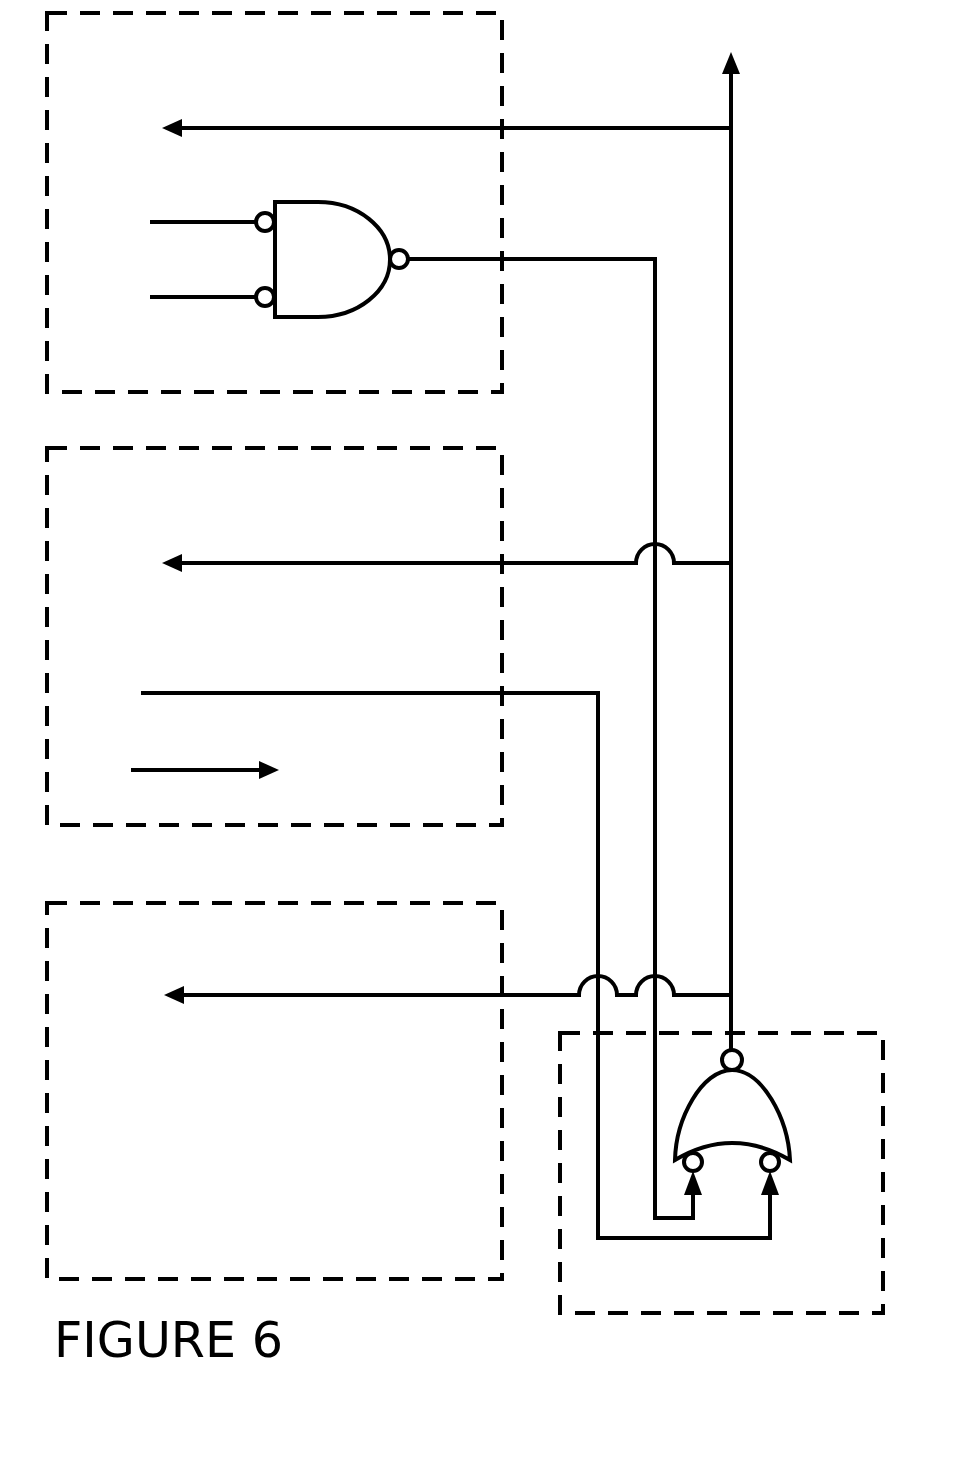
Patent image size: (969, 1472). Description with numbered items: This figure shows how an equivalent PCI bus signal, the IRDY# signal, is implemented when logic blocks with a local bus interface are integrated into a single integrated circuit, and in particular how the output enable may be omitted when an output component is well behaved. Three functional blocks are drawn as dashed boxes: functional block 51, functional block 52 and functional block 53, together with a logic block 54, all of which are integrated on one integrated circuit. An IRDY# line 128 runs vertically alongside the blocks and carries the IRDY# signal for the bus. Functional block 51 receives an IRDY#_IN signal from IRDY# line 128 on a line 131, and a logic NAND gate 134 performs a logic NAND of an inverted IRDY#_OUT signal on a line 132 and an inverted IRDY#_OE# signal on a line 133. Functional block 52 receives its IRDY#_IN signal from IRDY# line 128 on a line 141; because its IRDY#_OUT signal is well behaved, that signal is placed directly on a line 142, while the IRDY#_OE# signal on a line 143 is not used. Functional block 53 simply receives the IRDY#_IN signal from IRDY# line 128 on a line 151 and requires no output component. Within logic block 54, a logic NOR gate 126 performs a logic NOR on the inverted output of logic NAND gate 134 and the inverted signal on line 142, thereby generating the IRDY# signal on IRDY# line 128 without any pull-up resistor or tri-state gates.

The functional block 51 is at (367, 396).
The functional block 52 is at (368, 834).
The functional block 53 is at (369, 1287).
The logic block 54 is at (808, 1318).
The logic NOR gate 126 is at (792, 1142).
The IRDY# line 128 is at (733, 350).
The line 131 is at (216, 135).
The line 132 is at (179, 225).
The line 133 is at (179, 300).
The logic NAND gate 134 is at (293, 319).
The line 141 is at (215, 571).
The line 142 is at (197, 701).
The line 143 is at (179, 777).
The line 151 is at (216, 1003).